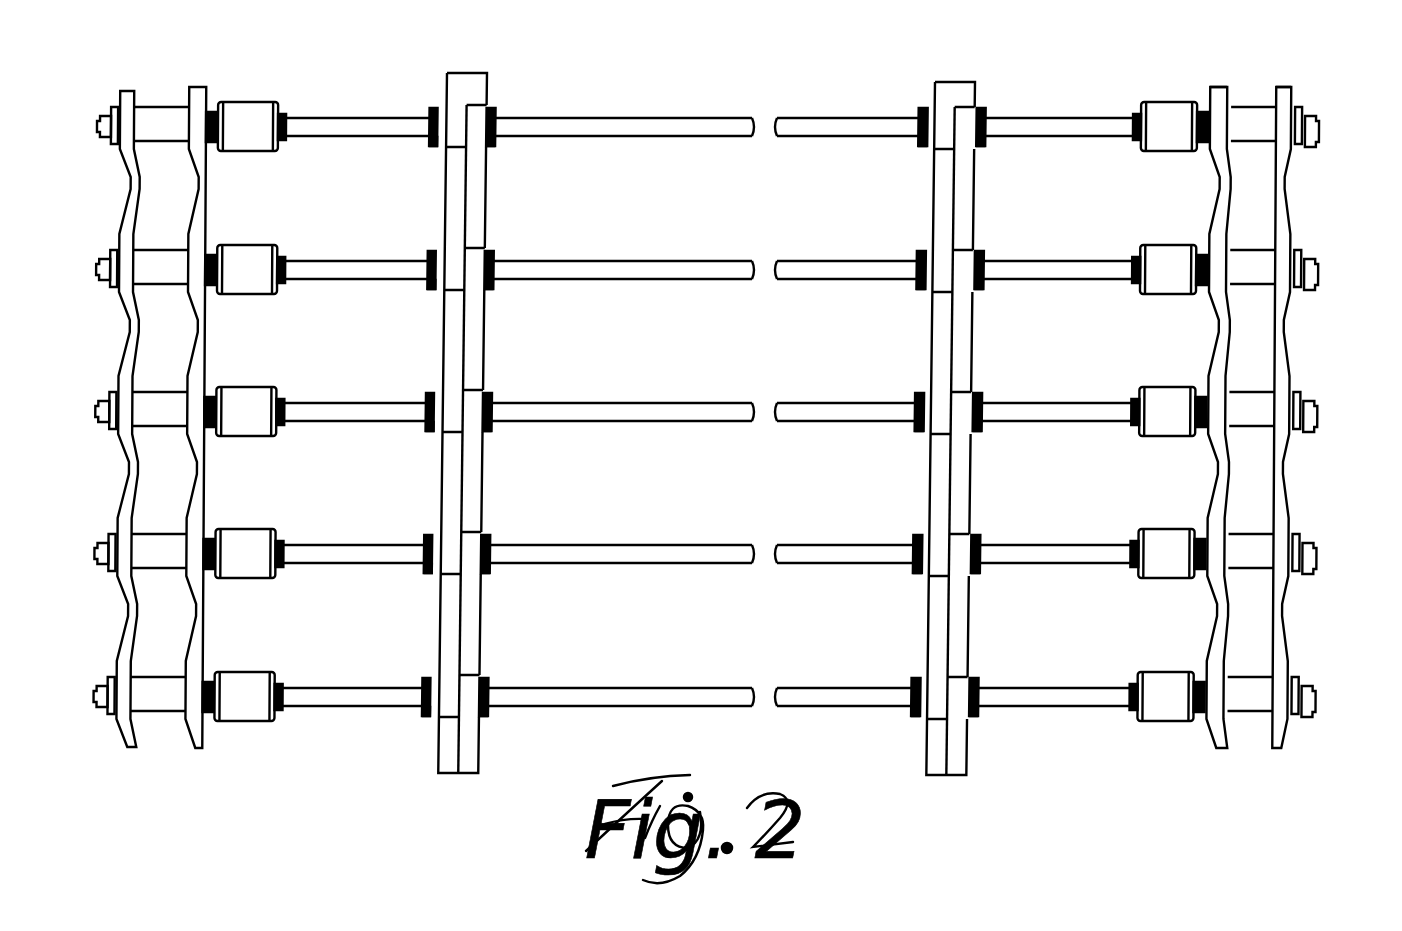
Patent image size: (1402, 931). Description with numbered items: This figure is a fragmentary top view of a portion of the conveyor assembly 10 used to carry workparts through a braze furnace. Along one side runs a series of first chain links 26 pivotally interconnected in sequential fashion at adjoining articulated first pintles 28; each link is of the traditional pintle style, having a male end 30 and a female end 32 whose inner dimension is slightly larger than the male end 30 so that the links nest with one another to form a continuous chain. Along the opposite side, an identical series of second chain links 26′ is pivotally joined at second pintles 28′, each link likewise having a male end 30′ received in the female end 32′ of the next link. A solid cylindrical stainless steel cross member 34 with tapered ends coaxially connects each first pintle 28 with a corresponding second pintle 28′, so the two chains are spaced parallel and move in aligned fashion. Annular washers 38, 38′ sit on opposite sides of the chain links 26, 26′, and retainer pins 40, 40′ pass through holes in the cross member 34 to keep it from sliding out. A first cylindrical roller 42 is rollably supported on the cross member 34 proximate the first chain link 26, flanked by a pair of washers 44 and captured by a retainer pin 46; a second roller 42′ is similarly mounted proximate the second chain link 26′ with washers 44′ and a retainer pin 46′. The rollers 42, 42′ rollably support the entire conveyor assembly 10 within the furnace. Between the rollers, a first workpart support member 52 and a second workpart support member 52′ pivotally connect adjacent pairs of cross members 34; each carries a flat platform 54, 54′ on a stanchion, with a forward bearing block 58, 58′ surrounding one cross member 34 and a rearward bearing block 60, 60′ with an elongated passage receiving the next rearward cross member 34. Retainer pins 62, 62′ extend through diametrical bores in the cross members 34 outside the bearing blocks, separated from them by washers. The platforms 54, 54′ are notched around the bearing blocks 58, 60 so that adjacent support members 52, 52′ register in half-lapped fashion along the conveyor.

The conveyor assembly 10 is at (1283, 98).
The first chain links 26 is at (203, 150).
The first pintles 28 is at (99, 127).
The male end 30 is at (121, 95).
The female end 32 is at (196, 102).
The cross member 34 is at (778, 118).
The annular washers 38 is at (113, 142).
The retainer pins 40 is at (111, 116).
The first cylindrical roller 42 is at (258, 132).
The washers 44 is at (300, 118).
The retainer pin 46 is at (283, 140).
The first workpart support member 52 is at (489, 78).
The platform 54 is at (458, 185).
The forward bearing block 58 is at (434, 108).
The rearward bearing block 60 is at (496, 112).
The retainer pins 62 is at (434, 144).
The second chain links 26′ is at (1220, 200).
The second pintles 28′ is at (1316, 127).
The male end 30′ is at (1226, 105).
The female end 32′ is at (1296, 100).
The annular washers 38′ is at (1202, 112).
The retainer pins 40′ is at (1310, 140).
The second roller 42′ is at (1168, 140).
The washers 44′ is at (1120, 118).
The retainer pin 46′ is at (1136, 133).
The second workpart support member 52′ is at (932, 190).
The platform 54′ is at (955, 182).
The forward bearing block 58′ is at (922, 108).
The rearward bearing block 60′ is at (982, 110).
The retainer pins 62′ is at (922, 144).